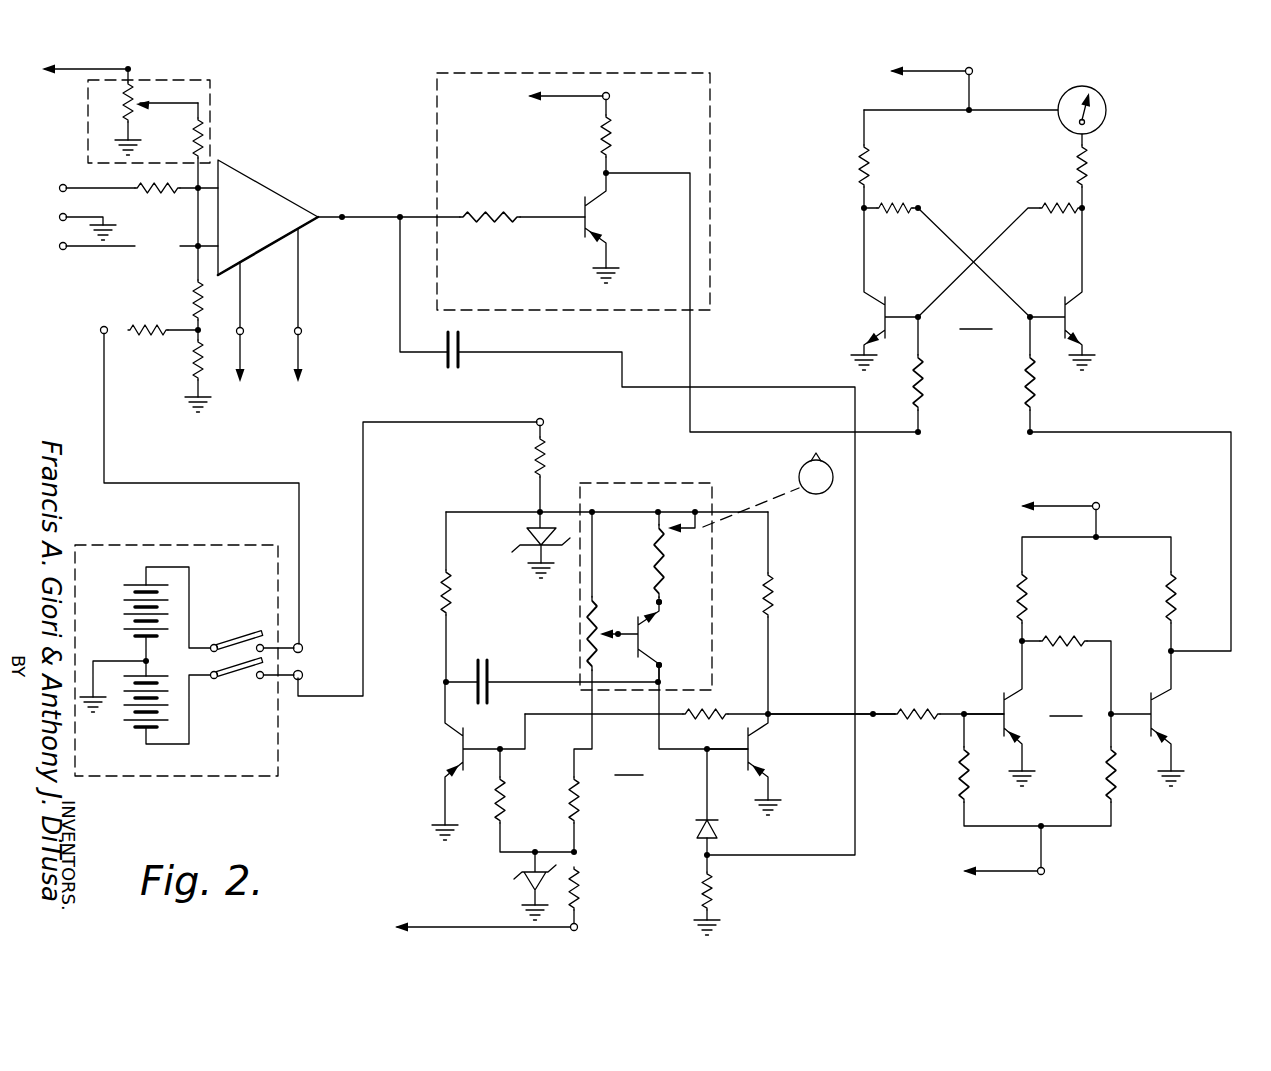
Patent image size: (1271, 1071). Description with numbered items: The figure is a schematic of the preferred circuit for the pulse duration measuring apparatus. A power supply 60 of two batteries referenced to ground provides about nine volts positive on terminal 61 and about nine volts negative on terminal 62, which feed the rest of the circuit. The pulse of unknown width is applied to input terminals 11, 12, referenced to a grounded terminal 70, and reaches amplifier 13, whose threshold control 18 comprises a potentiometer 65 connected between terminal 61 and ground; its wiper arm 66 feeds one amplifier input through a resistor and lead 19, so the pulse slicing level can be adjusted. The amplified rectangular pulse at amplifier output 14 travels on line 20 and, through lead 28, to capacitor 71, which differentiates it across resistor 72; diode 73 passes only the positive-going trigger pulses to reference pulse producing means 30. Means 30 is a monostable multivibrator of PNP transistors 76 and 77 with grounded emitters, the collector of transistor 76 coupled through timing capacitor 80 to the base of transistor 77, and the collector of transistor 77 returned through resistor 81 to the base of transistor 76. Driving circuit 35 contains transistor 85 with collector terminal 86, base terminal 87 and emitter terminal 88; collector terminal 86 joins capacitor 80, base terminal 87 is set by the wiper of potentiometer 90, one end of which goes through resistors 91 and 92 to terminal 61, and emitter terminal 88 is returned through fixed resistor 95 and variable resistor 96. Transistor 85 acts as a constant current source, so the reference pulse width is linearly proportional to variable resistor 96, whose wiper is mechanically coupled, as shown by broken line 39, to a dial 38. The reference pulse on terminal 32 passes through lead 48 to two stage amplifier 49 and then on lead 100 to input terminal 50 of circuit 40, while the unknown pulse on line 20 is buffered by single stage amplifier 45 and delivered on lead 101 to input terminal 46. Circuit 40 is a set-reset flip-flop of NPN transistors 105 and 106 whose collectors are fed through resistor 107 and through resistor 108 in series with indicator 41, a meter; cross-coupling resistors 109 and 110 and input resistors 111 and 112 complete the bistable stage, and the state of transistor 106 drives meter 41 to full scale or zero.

The input terminal 11 is at (64, 184).
The input terminal 12 is at (62, 246).
The amplifier 13 is at (281, 184).
The amplifier output 14 is at (346, 222).
The threshold control 18 is at (212, 92).
The resistor and lead 19 is at (198, 172).
The line 20 is at (514, 186).
The lead 28 is at (396, 334).
The reference pulse producing means 30 is at (629, 764).
The terminal 32 is at (874, 712).
The driving circuit 35 is at (646, 482).
The dial 38 is at (816, 494).
The broken line 39 is at (771, 504).
The circuit 40 is at (975, 317).
The indicator 41 is at (1113, 101).
The single stage transistor amplifier 45 is at (711, 108).
The input terminal 46 is at (922, 434).
The lead 48 is at (876, 724).
The amplifier 49 is at (1067, 706).
The input terminal 50 is at (1030, 434).
The power supply 60 is at (236, 780).
The terminal 61 is at (63, 73).
The terminal 62 is at (247, 380).
The potentiometer 65 is at (116, 100).
The wiper arm 66 is at (160, 104).
The terminal 70 is at (64, 214).
The capacitor 71 is at (462, 338).
The resistor 72 is at (718, 890).
The diode 73 is at (724, 828).
The first switching transistor 76 is at (450, 756).
The second switching transistor 77 is at (770, 764).
The capacitor 80 is at (472, 666).
The resistor 81 is at (752, 690).
The transistor 85 is at (643, 639).
The collector terminal 86 is at (661, 666).
The base terminal 87 is at (624, 635).
The emitter terminal 88 is at (662, 601).
The potentiometer 90 is at (590, 616).
The resistor 91 is at (576, 804).
The resistor 92 is at (576, 889).
The fixed resistor 95 is at (652, 583).
The variable resistor 96 is at (666, 527).
The lead 100 is at (1223, 490).
The lead 101 is at (812, 434).
The first switching transistor 105 is at (895, 304).
The second switching transistor 106 is at (1054, 306).
The resistor 107 is at (858, 164).
The resistor 108 is at (1092, 165).
The resistor 109 is at (896, 206).
The resistor 110 is at (1056, 206).
The resistor 111 is at (924, 386).
The resistor 112 is at (1032, 390).